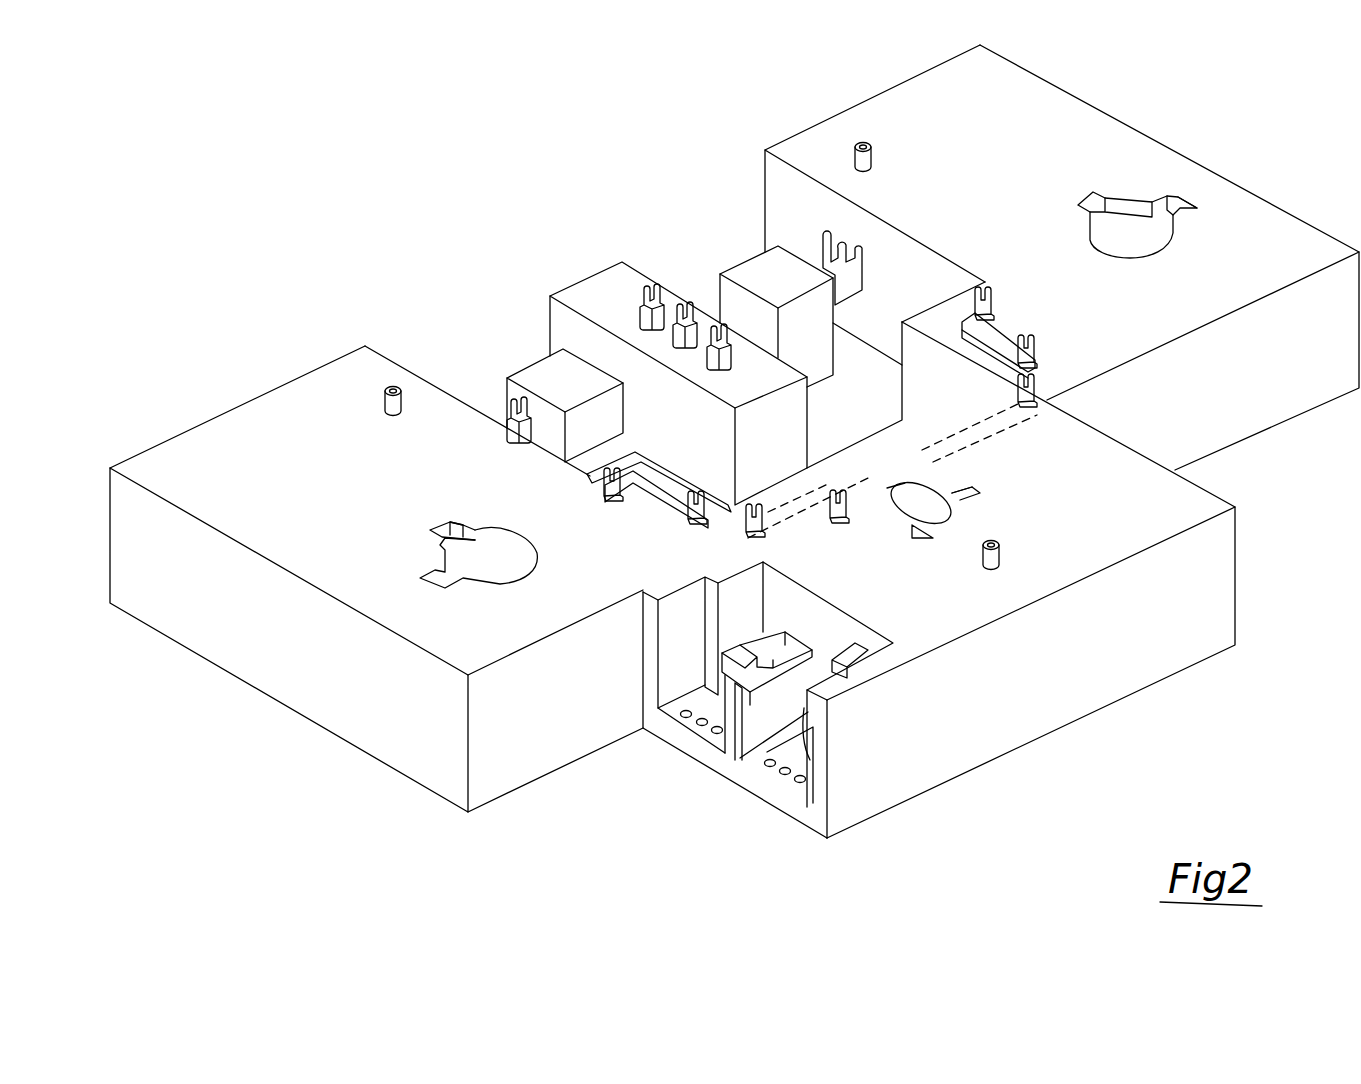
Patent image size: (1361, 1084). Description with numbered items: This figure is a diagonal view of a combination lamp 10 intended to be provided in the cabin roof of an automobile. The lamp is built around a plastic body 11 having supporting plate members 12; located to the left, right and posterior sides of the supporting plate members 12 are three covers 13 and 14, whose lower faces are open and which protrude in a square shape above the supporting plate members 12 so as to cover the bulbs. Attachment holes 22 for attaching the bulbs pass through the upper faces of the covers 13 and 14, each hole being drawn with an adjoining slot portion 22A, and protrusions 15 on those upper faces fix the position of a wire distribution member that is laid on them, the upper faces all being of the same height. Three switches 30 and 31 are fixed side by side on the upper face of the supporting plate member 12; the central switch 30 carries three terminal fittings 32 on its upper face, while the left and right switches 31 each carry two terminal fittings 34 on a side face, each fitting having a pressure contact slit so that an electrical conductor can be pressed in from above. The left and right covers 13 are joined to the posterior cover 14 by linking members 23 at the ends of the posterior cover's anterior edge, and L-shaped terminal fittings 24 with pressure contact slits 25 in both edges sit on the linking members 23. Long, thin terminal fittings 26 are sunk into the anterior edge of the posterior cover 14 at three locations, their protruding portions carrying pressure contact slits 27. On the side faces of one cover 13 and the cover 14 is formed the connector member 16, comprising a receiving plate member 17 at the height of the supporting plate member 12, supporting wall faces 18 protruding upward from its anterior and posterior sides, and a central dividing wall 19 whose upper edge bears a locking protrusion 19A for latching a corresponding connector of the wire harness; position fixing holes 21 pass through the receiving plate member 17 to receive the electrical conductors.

The combination lamp 10 is at (432, 185).
The plastic body 11 is at (568, 209).
The supporting plate member 12 is at (872, 388).
The cover 13 is at (262, 410).
The posterior cover 14 is at (1098, 540).
The protrusion 15 is at (395, 388).
The connector member 16 is at (727, 811).
The receiving plate member 17 is at (800, 752).
The supporting wall face 18 is at (675, 648).
The dividing wall 19 is at (755, 713).
The locking protrusion 19A is at (807, 641).
The position fixing hole 21 is at (693, 717).
The attachment hole 22 is at (495, 580).
The tab slot of keyhole 22A is at (462, 518).
The linking member 23 is at (643, 467).
The terminal fitting 24 is at (665, 503).
The pressure contact slit 25 is at (985, 297).
The terminal fitting 26 is at (1017, 428).
The pressure contact slit 27 is at (1035, 372).
The central switch 30 is at (600, 288).
The switch 31 is at (540, 378).
The terminal fitting 32 is at (697, 327).
The terminal fitting 34 is at (517, 440).